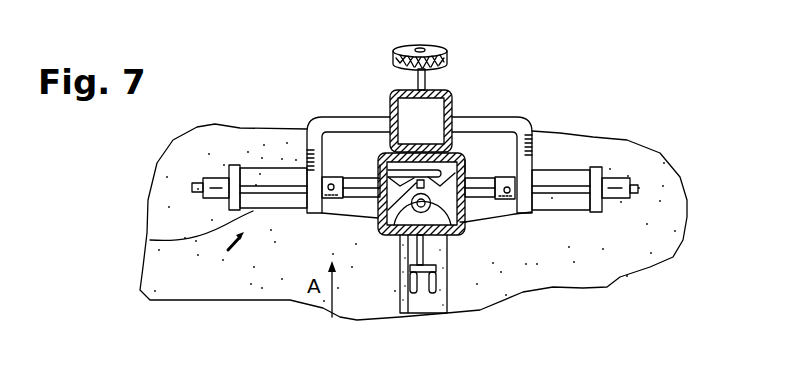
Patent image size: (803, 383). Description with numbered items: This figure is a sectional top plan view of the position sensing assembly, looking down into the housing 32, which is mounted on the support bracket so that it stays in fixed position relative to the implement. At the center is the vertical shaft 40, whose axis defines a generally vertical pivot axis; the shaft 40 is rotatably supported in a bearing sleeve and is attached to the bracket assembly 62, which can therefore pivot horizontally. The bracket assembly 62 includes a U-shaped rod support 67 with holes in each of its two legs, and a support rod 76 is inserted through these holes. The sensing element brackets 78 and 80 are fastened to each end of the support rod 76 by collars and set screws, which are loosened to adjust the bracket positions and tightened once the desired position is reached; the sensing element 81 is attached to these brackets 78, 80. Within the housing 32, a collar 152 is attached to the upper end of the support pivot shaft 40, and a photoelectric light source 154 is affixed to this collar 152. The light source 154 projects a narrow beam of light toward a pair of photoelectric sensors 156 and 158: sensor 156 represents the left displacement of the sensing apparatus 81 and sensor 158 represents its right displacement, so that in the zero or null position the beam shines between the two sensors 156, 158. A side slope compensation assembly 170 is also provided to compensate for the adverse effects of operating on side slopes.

The housing 32 is at (466, 222).
The vertical shaft 40 is at (389, 237).
The bracket assembly 62 is at (258, 236).
The U-shaped rod support 67 is at (372, 118).
The support rod 76 is at (150, 240).
The sensing element bracket 78 is at (257, 176).
The sensing element bracket 80 is at (577, 177).
The sensing element 81 is at (450, 237).
The collar 152 is at (458, 237).
The photoelectric light source 154 is at (378, 220).
The photoelectric sensor 156 is at (380, 172).
The photoelectric sensor 158 is at (468, 164).
The side slope compensation assembly 170 is at (461, 51).